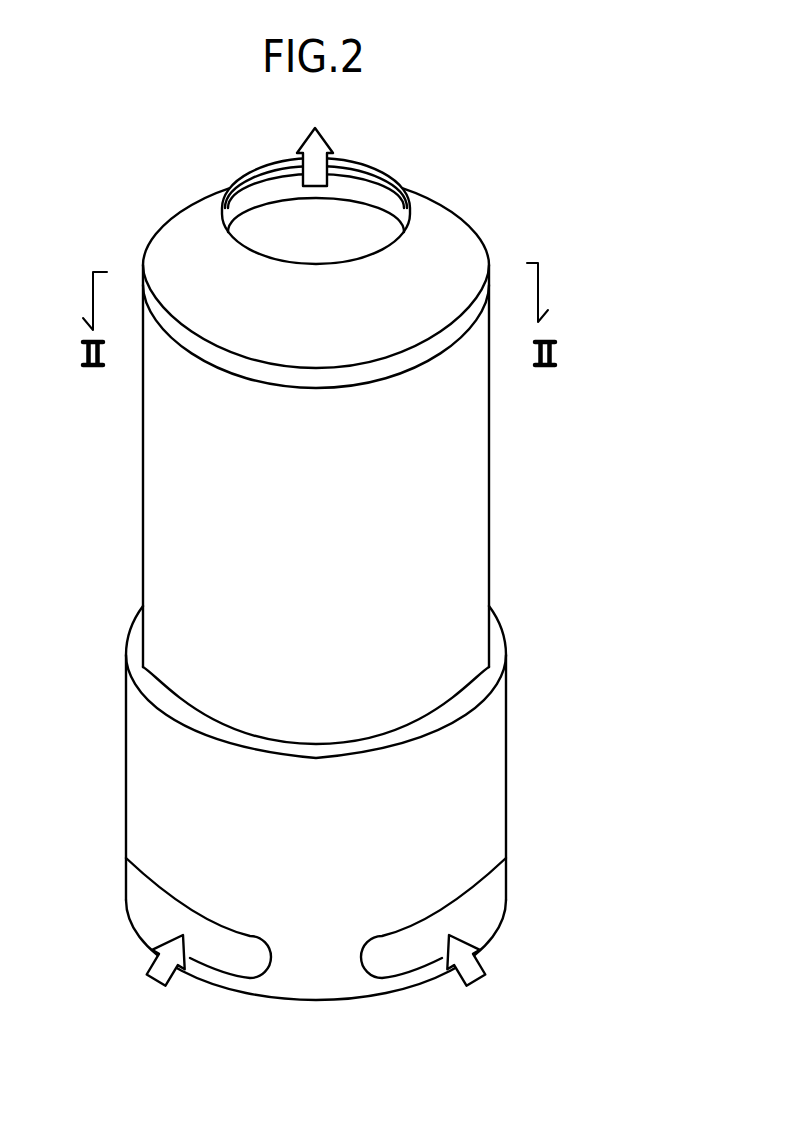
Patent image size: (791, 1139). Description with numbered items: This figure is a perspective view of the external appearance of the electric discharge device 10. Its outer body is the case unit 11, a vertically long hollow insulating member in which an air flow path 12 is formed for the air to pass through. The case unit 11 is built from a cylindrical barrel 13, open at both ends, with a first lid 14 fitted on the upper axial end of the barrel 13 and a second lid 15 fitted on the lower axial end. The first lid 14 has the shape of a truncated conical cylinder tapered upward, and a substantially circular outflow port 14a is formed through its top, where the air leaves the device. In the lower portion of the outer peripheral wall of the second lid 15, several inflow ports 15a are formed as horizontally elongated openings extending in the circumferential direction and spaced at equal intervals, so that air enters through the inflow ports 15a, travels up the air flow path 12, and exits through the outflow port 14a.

The electric discharge device 10 is at (568, 170).
The case unit 11 is at (445, 200).
The air flow path 12 is at (166, 556).
The cylindrical barrel 13 is at (490, 484).
The first lid 14 is at (478, 228).
The outflow port 14a is at (363, 160).
The second lid 15 is at (508, 829).
The inflow port 15a is at (507, 887).